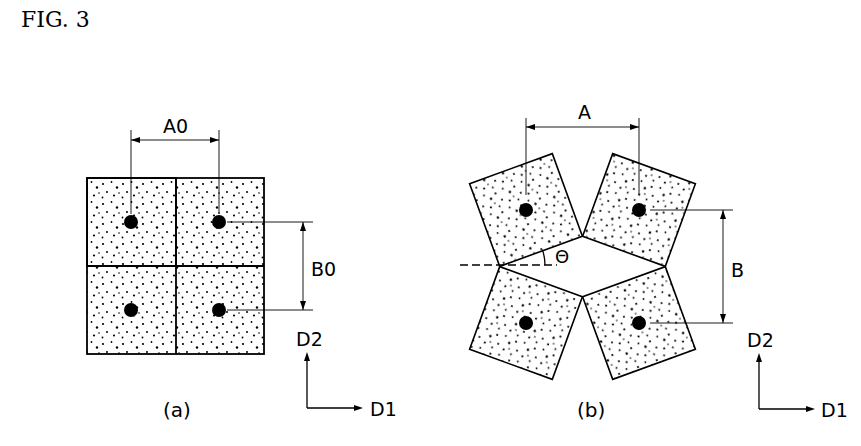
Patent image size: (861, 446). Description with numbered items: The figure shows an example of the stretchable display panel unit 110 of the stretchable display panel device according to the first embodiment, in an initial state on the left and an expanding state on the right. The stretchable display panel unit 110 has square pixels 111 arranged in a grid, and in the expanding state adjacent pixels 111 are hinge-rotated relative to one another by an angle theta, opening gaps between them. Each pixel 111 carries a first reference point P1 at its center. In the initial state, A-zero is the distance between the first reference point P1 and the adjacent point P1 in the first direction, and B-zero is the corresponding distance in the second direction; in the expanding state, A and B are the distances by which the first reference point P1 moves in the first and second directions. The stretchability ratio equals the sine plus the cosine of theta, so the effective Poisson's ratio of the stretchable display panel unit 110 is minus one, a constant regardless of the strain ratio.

The stretchable display panel unit 110 is at (97, 174).
The pixel 111 is at (88, 211).
The first reference point P1 is at (125, 310).